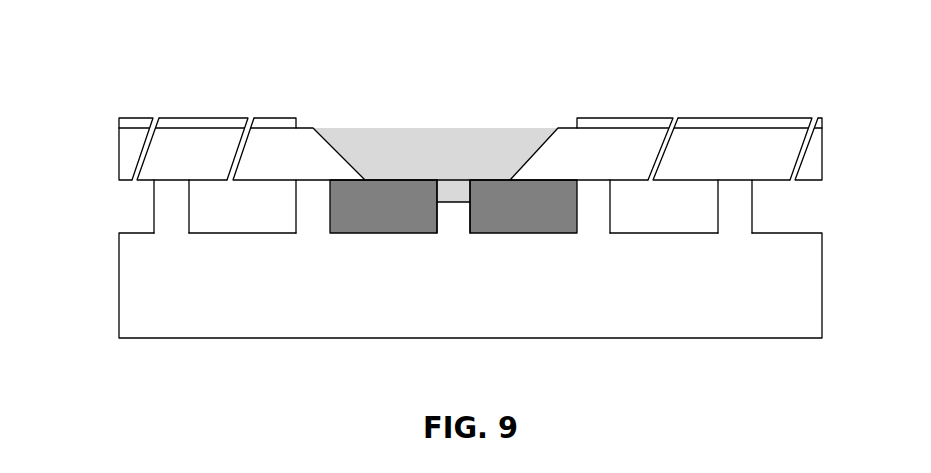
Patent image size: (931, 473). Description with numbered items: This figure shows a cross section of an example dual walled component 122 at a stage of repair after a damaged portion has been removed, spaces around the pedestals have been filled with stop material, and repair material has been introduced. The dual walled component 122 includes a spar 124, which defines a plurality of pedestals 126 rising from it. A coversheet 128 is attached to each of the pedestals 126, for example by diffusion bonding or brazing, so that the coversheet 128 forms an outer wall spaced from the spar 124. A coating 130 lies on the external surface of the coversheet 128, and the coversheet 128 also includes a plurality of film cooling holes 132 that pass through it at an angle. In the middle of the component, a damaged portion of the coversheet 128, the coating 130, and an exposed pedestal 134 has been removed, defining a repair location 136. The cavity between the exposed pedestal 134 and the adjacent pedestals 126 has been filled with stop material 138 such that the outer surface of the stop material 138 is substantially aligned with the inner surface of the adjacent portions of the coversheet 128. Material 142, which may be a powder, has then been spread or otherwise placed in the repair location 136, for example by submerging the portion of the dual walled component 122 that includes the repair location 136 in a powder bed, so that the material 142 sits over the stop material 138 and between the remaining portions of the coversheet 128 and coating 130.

The dual walled component 122 is at (434, 174).
The spar 124 is at (127, 287).
The pedestals 126 is at (303, 206).
The coversheet 128 is at (118, 153).
The coating 130 is at (118, 126).
The film cooling holes 132 is at (233, 127).
The exposed pedestal 134 is at (453, 215).
The repair location 136 is at (454, 142).
The stop material 138 is at (410, 190).
The material 142 is at (382, 145).